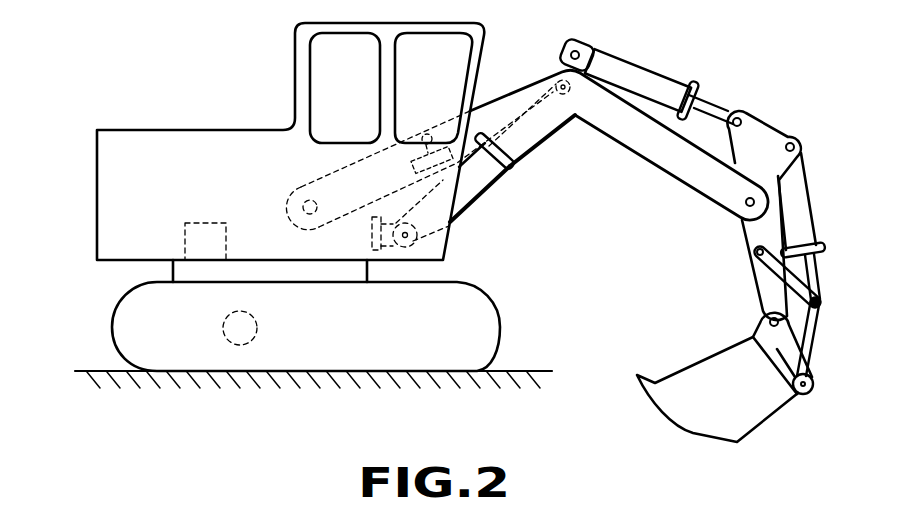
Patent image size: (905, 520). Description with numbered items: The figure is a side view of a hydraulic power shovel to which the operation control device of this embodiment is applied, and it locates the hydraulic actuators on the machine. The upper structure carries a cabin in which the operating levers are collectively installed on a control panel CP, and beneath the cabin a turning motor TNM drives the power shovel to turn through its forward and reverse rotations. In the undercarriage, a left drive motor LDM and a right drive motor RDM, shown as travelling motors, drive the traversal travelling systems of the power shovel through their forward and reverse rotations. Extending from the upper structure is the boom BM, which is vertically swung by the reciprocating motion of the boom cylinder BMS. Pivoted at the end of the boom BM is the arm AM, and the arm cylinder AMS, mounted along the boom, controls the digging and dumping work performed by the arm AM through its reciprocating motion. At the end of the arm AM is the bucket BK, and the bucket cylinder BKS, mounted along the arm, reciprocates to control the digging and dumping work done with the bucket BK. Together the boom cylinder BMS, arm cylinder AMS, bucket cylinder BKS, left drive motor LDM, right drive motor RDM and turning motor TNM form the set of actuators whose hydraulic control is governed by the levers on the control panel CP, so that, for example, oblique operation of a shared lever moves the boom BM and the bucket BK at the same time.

The turning motor TNM is at (200, 223).
The left drive motor LDM is at (138, 328).
The right drive motor RDM is at (223, 326).
The control panel CP is at (412, 132).
The boom BM is at (528, 85).
The boom cylinder BMS is at (480, 183).
The arm cylinder AMS is at (661, 88).
The arm AM is at (770, 141).
The bucket cylinder BKS is at (808, 200).
The bucket BK is at (765, 415).